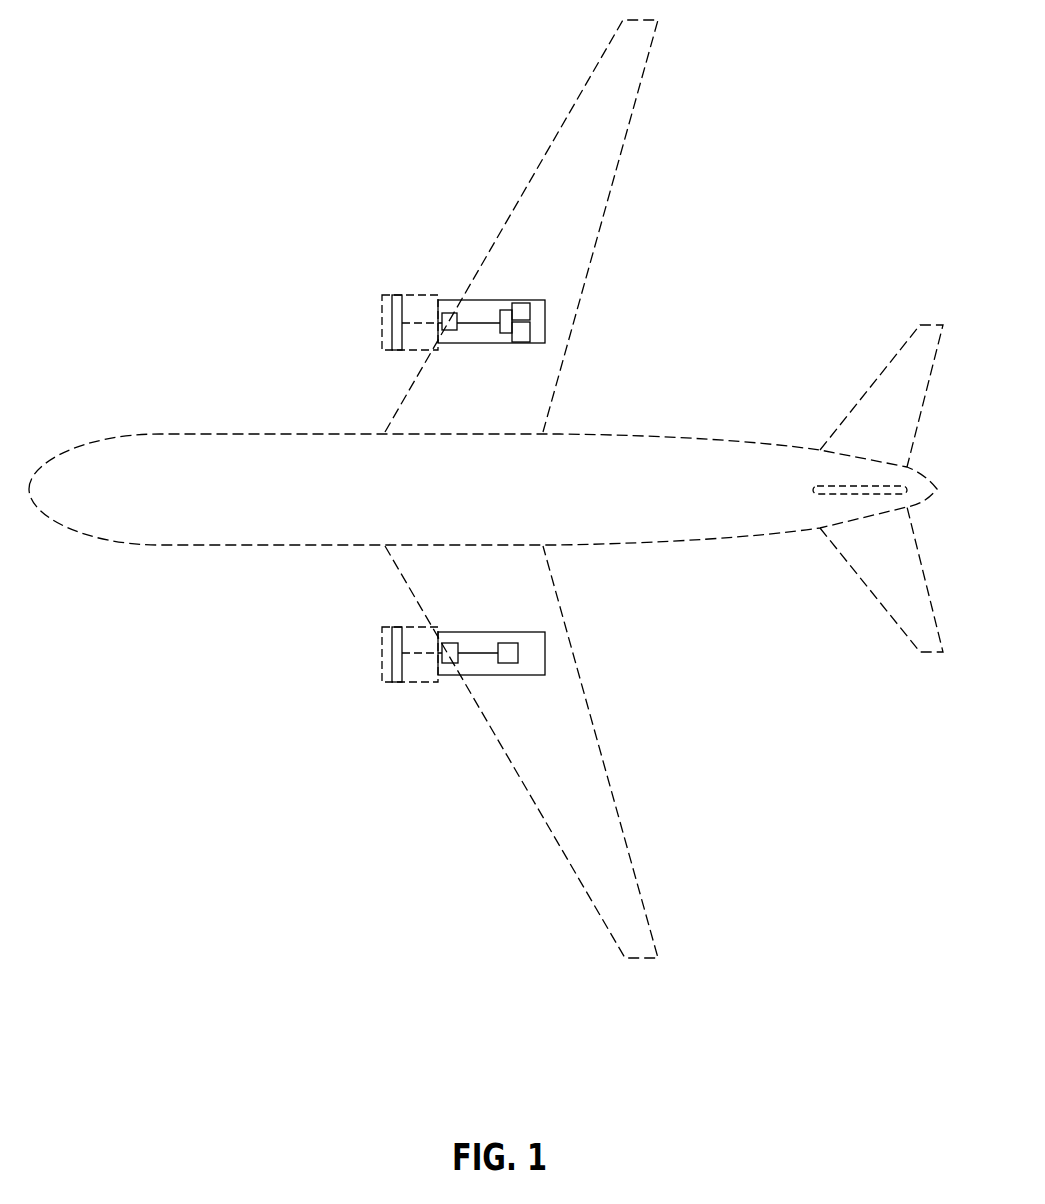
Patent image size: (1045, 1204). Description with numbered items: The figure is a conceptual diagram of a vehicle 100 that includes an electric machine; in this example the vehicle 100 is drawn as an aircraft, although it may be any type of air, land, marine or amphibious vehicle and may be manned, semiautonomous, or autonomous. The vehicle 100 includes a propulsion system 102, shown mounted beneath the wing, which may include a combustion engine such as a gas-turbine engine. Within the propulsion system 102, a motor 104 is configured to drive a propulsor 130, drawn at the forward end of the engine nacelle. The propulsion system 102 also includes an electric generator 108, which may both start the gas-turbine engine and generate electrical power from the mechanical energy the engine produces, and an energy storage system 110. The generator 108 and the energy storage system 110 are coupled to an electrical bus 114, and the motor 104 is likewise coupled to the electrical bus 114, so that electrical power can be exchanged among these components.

The vehicle 100 is at (803, 115).
The propulsion system 102 is at (441, 309).
The motor 104 is at (447, 331).
The electric generator 108 is at (530, 338).
The energy storage system 110 is at (517, 303).
The electrical bus 114 is at (493, 324).
The propulsor 130 is at (397, 350).